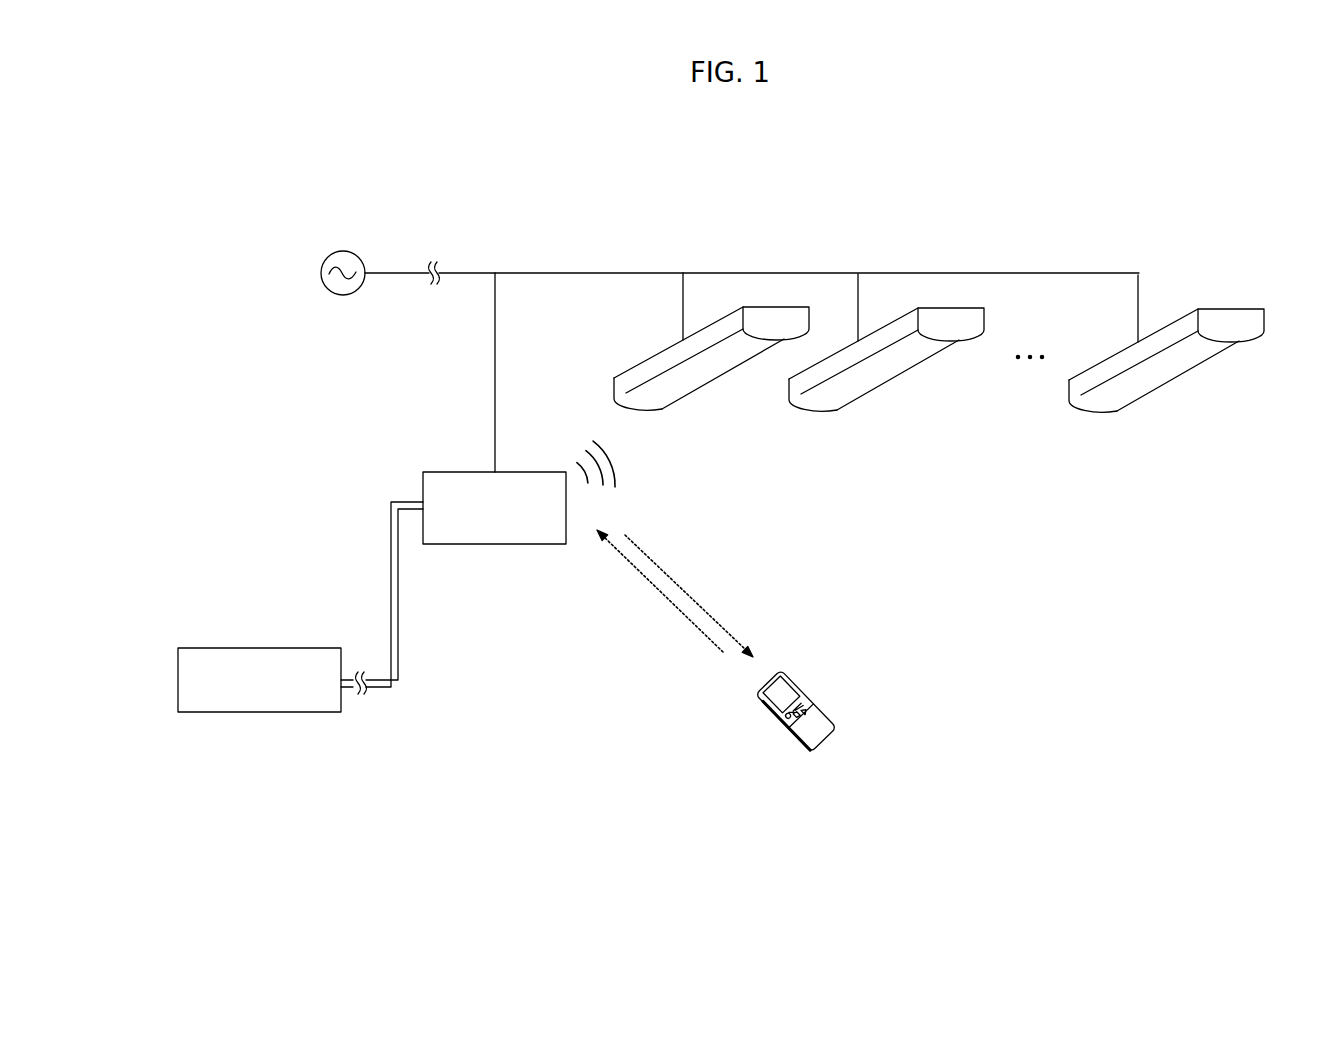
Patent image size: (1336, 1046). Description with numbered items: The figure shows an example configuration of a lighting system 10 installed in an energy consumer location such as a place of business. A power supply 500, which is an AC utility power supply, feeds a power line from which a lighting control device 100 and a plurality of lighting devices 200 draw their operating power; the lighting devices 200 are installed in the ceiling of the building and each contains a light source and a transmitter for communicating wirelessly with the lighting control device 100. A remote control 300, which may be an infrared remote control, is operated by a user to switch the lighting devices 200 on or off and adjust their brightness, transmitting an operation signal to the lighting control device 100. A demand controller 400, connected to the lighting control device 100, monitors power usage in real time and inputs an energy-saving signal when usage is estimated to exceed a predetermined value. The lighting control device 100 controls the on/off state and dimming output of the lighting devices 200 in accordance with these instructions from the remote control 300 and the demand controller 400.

The lighting system 10 is at (1285, 203).
The lighting control device 100 is at (423, 488).
The lighting devices 200 is at (668, 410).
The remote control 300 is at (815, 702).
The demand controller 400 is at (178, 672).
The power supply 500 is at (327, 257).